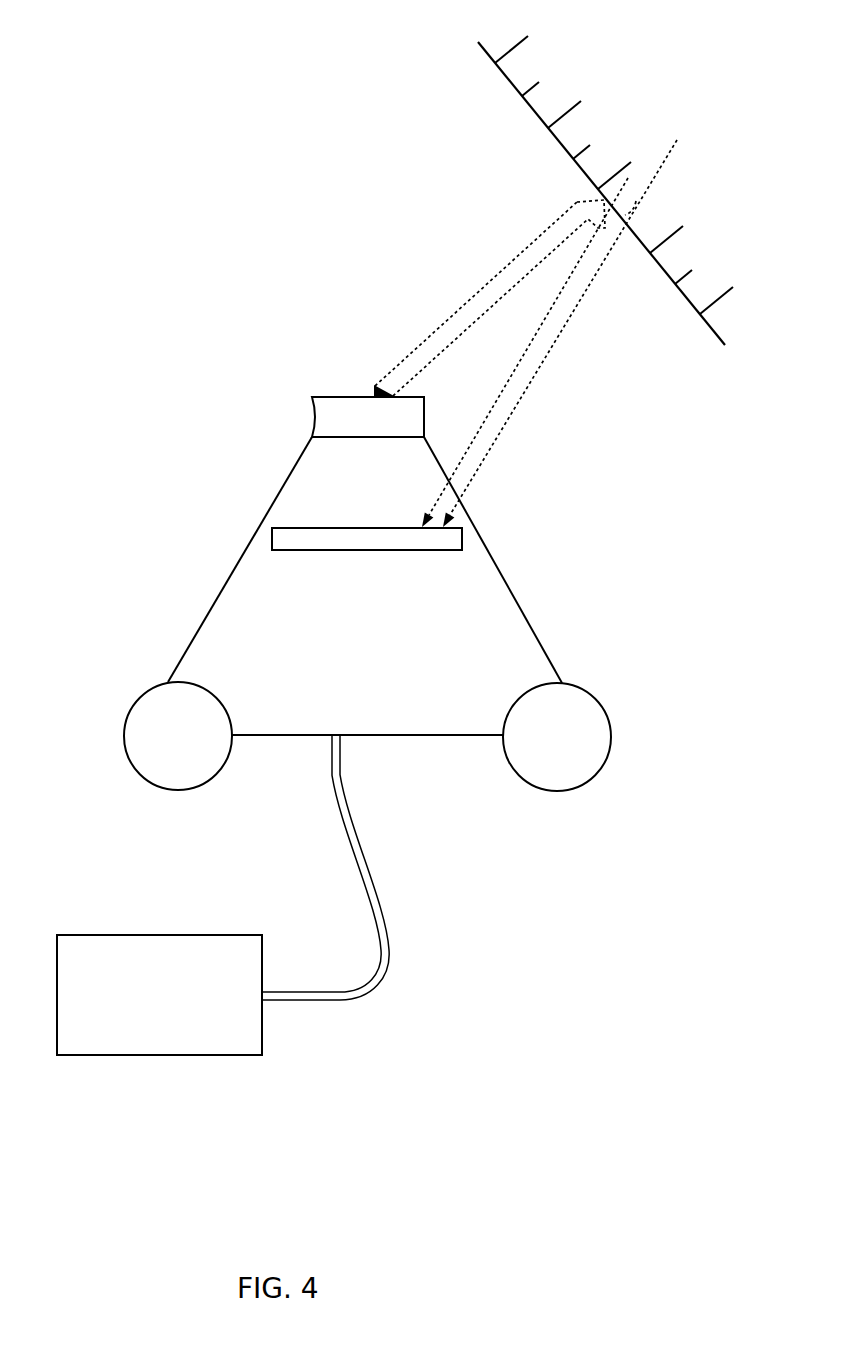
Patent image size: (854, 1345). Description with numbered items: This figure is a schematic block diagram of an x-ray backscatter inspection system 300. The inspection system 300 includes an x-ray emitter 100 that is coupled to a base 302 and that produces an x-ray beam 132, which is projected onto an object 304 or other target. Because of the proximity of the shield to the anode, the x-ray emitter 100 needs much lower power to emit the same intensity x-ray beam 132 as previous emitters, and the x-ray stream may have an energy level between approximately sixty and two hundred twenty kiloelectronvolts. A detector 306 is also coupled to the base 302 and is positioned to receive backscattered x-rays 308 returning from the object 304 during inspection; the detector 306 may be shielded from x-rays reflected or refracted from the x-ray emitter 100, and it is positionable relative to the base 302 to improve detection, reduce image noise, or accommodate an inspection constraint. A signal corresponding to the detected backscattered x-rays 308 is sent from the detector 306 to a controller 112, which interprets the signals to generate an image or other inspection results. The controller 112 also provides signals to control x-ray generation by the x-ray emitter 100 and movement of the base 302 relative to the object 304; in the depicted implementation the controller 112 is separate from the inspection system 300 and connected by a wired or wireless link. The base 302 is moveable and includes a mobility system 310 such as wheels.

The x-ray backscatter inspection system 300 is at (148, 58).
The object 304 is at (502, 74).
The x-ray beam 132 is at (560, 228).
The backscattered x-rays 308 is at (560, 298).
The x-ray emitter 100 is at (368, 417).
The detector 306 is at (370, 552).
The base 302 is at (538, 638).
The mobility system 310 is at (367, 736).
The controller 112 is at (221, 895).